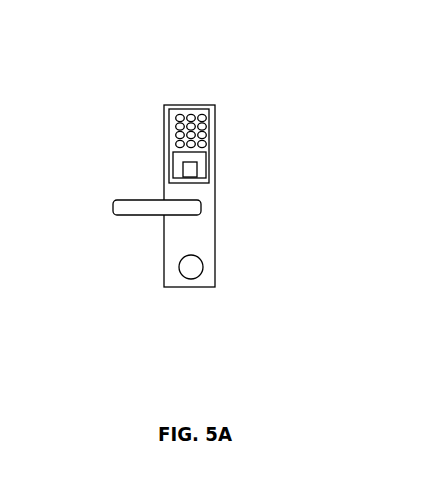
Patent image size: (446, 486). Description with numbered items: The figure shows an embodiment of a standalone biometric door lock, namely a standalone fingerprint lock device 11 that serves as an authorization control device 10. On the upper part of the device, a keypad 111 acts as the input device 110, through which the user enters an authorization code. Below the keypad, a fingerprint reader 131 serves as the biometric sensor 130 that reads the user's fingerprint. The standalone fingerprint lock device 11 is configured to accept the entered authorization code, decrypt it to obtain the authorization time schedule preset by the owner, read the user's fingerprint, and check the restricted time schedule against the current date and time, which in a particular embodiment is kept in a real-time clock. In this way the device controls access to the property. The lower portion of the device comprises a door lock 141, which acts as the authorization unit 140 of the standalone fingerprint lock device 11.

The authorization control device 10 is at (167, 85).
The standalone fingerprint lock device 11 is at (222, 90).
The input device 110 is at (169, 124).
The keypad 111 is at (215, 124).
The biometric sensor 130 is at (186, 162).
The fingerprint reader 131 is at (215, 161).
The authorization unit 140 is at (168, 252).
The door lock 141 is at (212, 251).